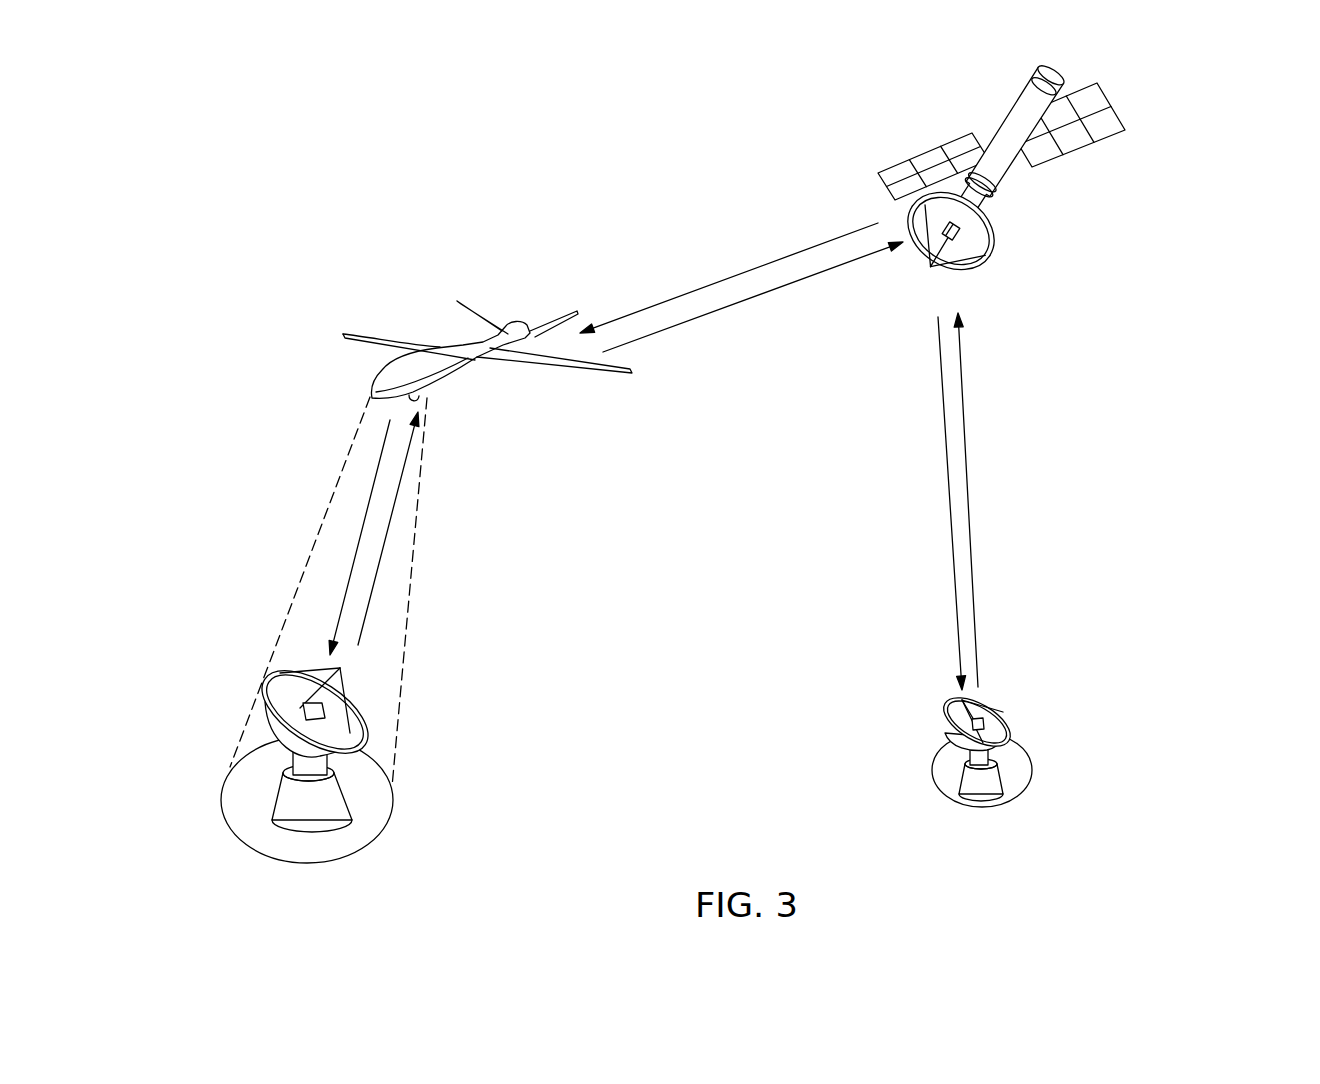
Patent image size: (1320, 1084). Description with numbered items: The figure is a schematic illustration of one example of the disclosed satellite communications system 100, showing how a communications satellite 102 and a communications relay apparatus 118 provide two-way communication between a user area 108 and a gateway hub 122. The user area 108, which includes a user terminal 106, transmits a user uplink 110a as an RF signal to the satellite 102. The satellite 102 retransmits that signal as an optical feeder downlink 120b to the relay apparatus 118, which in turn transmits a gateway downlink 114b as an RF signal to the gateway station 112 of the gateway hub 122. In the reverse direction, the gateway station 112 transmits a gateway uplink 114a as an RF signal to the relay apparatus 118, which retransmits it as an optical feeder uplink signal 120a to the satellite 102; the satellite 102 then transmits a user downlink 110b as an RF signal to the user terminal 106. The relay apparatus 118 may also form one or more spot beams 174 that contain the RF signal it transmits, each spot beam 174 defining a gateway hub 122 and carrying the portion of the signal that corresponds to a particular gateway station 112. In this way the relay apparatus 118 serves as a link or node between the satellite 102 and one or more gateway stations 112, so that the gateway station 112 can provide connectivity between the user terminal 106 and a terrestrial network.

The satellite communications system 100 is at (732, 474).
The communications satellite 102 is at (995, 238).
The user terminal 106 is at (982, 799).
The user area 108 is at (963, 805).
The user uplink 110a is at (968, 513).
The user downlink 110b is at (952, 537).
The gateway station 112 is at (297, 833).
The gateway uplink 114a is at (392, 510).
The gateway downlink 114b is at (363, 523).
The communications relay apparatus 118 is at (398, 337).
The feeder uplink signal 120a is at (783, 287).
The feeder downlink 120b is at (733, 275).
The gateway hub 122 is at (242, 840).
The spot beam 174 is at (407, 607).